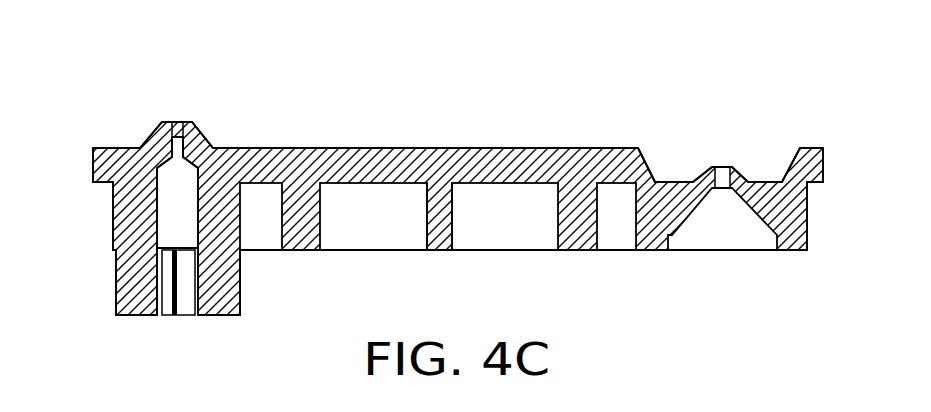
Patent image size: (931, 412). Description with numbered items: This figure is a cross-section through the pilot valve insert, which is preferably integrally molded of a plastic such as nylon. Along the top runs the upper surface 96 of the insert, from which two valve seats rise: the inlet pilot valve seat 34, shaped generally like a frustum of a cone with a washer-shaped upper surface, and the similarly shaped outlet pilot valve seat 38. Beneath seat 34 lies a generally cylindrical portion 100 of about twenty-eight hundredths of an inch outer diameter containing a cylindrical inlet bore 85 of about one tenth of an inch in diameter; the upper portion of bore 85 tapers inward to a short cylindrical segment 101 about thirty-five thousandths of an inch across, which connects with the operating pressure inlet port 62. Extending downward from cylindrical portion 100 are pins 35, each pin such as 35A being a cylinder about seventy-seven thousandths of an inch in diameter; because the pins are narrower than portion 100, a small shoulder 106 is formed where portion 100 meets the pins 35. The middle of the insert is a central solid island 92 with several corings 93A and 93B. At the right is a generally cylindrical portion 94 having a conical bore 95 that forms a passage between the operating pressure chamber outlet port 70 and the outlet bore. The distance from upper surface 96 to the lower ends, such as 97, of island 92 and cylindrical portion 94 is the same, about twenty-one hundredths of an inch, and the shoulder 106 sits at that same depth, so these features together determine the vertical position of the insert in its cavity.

The inlet pilot valve seat 34 is at (197, 133).
The pins 35 is at (252, 277).
The pin 35A is at (118, 300).
The outlet pilot valve seat 38 is at (751, 178).
The operating pressure inlet port 62 is at (176, 122).
The operating pressure chamber outlet port 70 is at (722, 176).
The cylindrical inlet bore 85 is at (165, 197).
The central solid island 92 is at (308, 197).
The coring 93A is at (373, 237).
The coring 93B is at (507, 233).
The generally cylindrical portion 94 is at (787, 250).
The conical bore 95 is at (732, 228).
The upper surface 96 is at (395, 148).
The lower end 97 is at (437, 250).
The generally cylindrical portion 100 is at (118, 231).
The short cylindrical segment 101 is at (158, 137).
The shoulder 106 is at (115, 251).